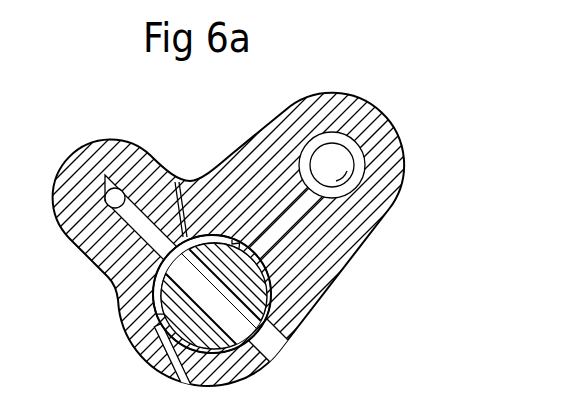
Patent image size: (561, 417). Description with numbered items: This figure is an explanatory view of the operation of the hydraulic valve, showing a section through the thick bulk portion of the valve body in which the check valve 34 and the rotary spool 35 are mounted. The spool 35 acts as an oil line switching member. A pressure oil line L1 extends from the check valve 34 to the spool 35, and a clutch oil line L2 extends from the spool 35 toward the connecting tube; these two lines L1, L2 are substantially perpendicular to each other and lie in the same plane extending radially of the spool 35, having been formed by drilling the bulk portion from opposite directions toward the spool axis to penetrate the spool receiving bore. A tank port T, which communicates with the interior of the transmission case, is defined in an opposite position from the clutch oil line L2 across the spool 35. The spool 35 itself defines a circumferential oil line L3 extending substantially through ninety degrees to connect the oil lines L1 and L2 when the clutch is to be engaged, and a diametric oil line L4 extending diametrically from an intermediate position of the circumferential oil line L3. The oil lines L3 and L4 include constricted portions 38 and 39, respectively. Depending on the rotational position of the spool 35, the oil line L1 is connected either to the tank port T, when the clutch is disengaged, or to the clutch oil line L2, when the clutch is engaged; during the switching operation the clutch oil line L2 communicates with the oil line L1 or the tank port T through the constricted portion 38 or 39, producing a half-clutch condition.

The check valve 34 is at (352, 187).
The rotary spool 35 is at (157, 318).
The constricted portion 38 is at (223, 226).
The constricted portion 39 is at (264, 328).
The pressure oil line L1 is at (283, 220).
The clutch oil line L2 is at (100, 250).
The circumferential oil line L3 is at (176, 181).
The diametric oil line L4 is at (170, 374).
The tank port T is at (272, 358).